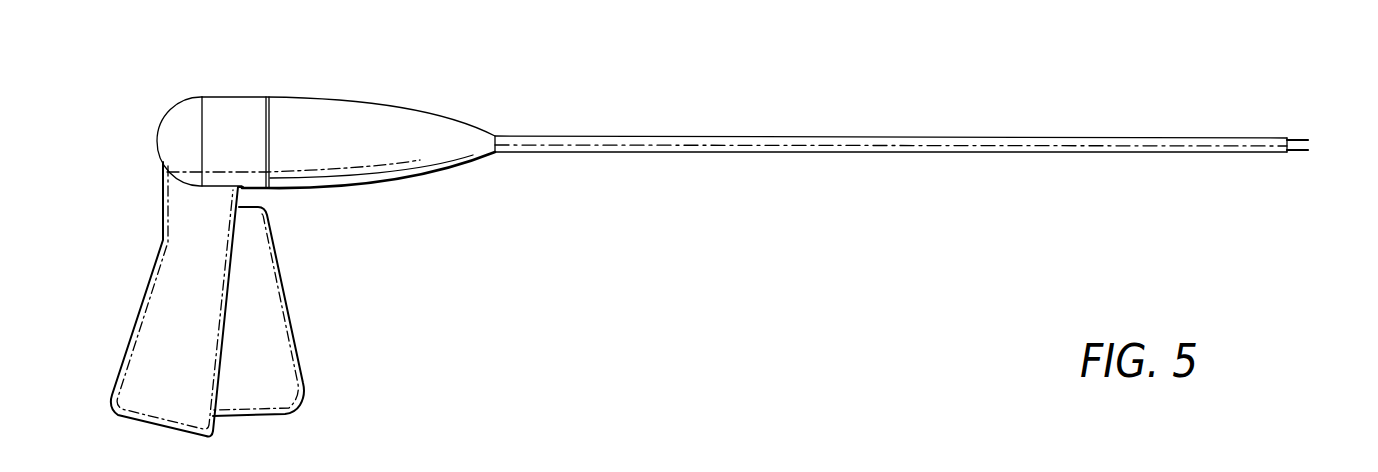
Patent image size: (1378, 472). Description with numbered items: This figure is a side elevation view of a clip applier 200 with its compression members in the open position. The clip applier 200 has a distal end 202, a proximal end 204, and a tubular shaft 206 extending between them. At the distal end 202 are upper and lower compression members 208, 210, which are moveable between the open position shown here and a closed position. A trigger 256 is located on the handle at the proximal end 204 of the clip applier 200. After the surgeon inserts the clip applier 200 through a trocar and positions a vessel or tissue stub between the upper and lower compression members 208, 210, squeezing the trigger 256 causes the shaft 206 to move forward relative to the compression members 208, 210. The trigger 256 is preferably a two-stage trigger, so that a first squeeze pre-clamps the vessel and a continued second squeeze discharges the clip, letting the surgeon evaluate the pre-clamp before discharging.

The clip applier 200 is at (278, 72).
The distal end 202 is at (1282, 140).
The proximal end 204 is at (158, 129).
The tubular shaft 206 is at (926, 137).
The upper compression member 208 is at (1295, 139).
The lower compression member 210 is at (1295, 152).
The trigger 256 is at (263, 318).